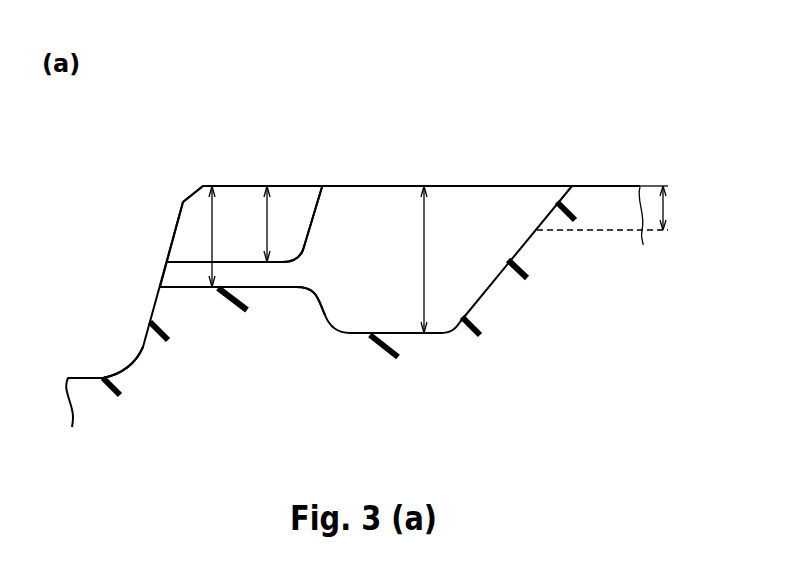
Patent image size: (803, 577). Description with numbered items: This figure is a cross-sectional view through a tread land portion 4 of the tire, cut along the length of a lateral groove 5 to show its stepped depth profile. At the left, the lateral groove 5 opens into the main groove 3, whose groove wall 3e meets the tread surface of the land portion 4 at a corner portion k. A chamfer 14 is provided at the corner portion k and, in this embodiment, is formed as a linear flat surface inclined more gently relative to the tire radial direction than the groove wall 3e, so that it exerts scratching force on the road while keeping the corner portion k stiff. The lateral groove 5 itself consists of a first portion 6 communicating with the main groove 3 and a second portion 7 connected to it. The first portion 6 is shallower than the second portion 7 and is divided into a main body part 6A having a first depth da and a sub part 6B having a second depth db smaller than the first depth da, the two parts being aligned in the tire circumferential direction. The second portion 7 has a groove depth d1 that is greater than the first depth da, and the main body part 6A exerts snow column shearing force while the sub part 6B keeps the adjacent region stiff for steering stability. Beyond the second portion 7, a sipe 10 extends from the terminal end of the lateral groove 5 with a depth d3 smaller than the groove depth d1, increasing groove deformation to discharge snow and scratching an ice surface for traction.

The main groove 3 is at (108, 304).
The groove wall 3e is at (160, 293).
The chamfer 14 is at (192, 198).
The corner portion k is at (157, 165).
The first portion 6 is at (312, 121).
The main body part 6A is at (238, 270).
The sub part 6B is at (293, 213).
The second portion 7 is at (375, 300).
The land portion 4 is at (594, 185).
The lateral groove 5 is at (468, 155).
The sipe 10 is at (618, 210).
The depth of sipe d3 is at (678, 208).
The groove depth of second portion d1 is at (425, 260).
The first depth da is at (212, 237).
The second depth db is at (267, 230).